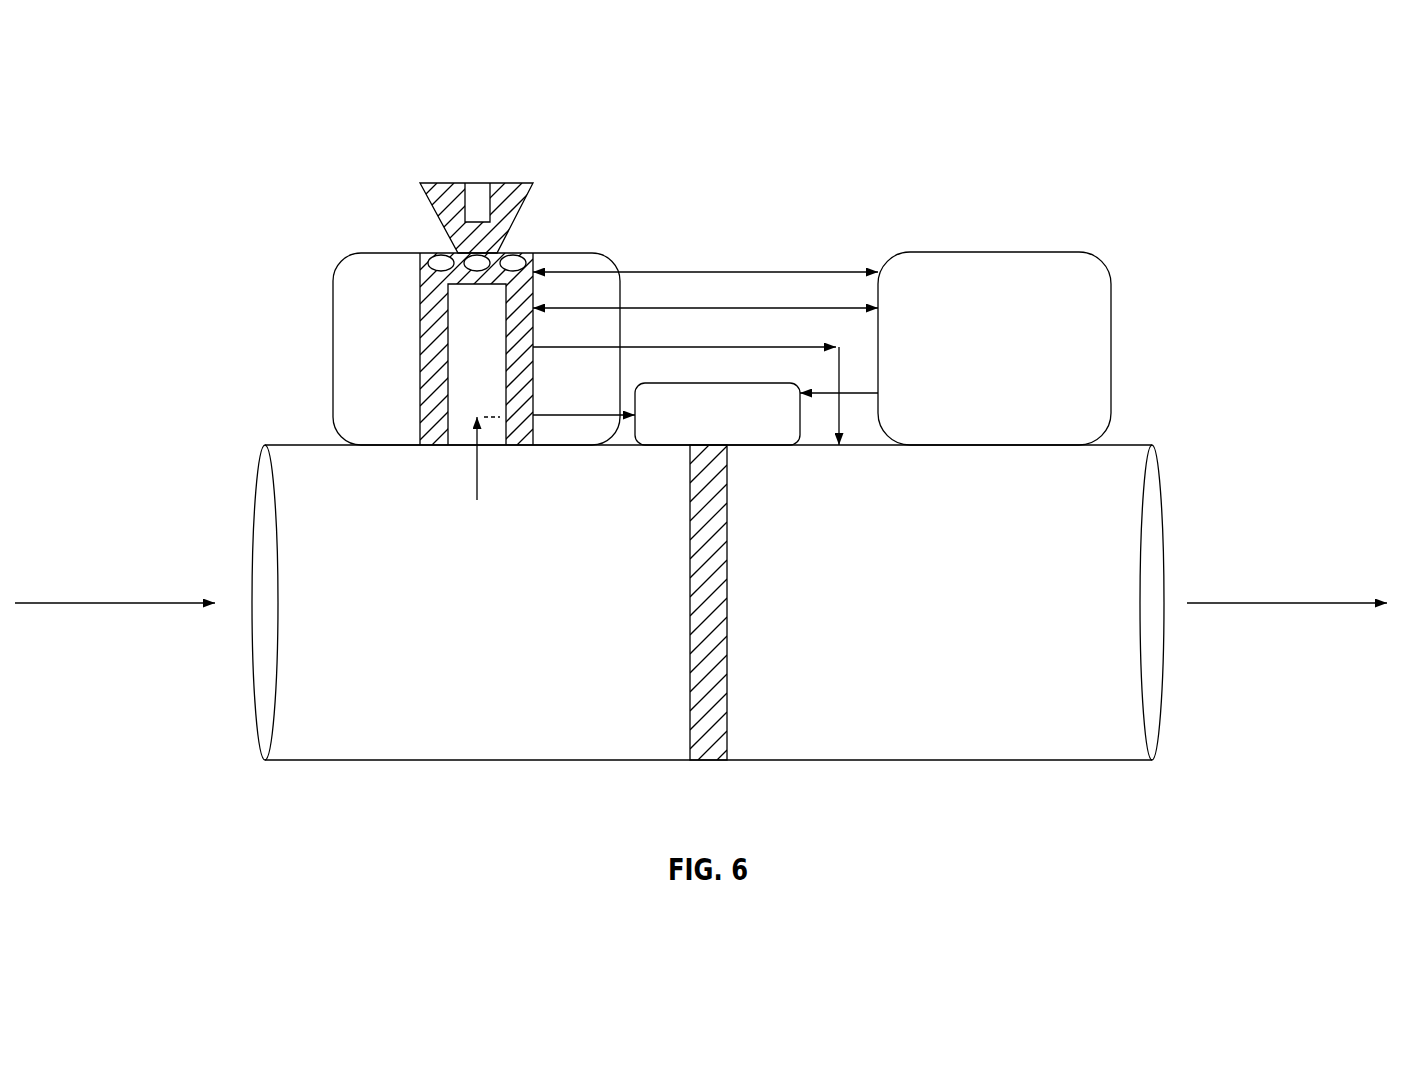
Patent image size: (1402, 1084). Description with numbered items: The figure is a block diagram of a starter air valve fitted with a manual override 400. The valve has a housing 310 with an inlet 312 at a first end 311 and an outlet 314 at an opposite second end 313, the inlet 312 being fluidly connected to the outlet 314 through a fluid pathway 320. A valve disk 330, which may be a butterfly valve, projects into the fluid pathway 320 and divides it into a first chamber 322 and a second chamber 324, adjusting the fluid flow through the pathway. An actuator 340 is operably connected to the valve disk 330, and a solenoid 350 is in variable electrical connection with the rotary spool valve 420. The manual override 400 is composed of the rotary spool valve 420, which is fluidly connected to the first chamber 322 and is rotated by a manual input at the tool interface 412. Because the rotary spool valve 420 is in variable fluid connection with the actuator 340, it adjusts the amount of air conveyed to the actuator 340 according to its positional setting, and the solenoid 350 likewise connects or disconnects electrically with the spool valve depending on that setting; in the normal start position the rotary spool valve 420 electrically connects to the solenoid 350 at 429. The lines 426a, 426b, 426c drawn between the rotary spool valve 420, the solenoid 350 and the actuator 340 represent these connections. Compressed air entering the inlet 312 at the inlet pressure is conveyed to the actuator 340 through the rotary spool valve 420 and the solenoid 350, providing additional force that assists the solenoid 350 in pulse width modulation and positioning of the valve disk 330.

The manual override 400 is at (208, 217).
The tool interface 412 is at (477, 183).
The rotary spool valve 420 is at (333, 350).
The electrical connection 429 is at (705, 272).
The fluid connection line 426a is at (705, 308).
The fluid connection line 426b is at (585, 417).
The fluid connection line 426c is at (687, 347).
The solenoid 350 is at (1111, 353).
The actuator 340 is at (802, 435).
The valve disk 330 is at (709, 603).
The housing 310 is at (934, 760).
The first end 311 is at (255, 745).
The inlet 312 is at (212, 507).
The second end 313 is at (1157, 750).
The outlet 314 is at (1197, 527).
The fluid pathway 320 is at (402, 680).
The first chamber 322 is at (618, 709).
The second chamber 324 is at (815, 709).